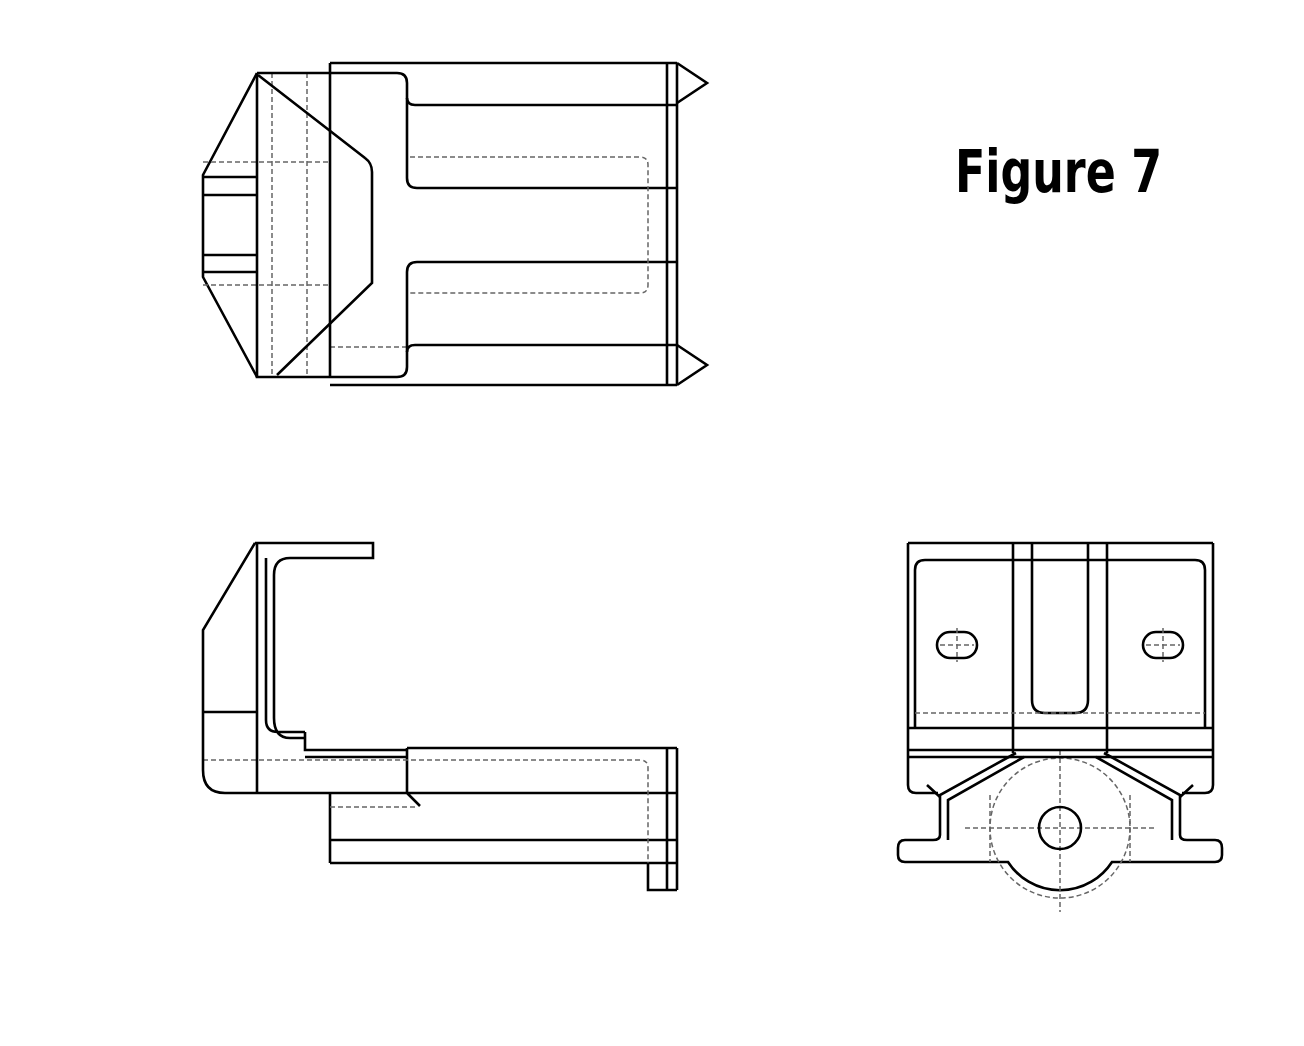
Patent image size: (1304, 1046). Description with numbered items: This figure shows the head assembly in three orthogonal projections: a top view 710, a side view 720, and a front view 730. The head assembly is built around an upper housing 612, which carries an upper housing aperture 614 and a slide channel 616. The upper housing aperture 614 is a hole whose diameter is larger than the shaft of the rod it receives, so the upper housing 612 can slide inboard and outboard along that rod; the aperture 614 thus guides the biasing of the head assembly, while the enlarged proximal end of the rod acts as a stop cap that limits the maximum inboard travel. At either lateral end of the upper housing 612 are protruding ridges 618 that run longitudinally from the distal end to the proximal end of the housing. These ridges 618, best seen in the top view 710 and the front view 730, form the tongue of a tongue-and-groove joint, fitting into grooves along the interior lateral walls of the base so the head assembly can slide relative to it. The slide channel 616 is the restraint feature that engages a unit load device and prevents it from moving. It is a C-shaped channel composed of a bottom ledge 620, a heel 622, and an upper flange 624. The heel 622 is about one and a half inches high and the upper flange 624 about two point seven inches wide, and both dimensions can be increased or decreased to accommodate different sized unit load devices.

The top view 710 is at (203, 113).
The side view 720 is at (488, 630).
The front view 730 is at (936, 512).
The upper housing 612 is at (625, 222).
The upper housing aperture 614 is at (1060, 828).
The slide channel 616 is at (370, 748).
The protruding ridges 618 is at (938, 838).
The bottom ledge 620 is at (362, 350).
The heel 622 is at (272, 647).
The upper flange 624 is at (320, 233).